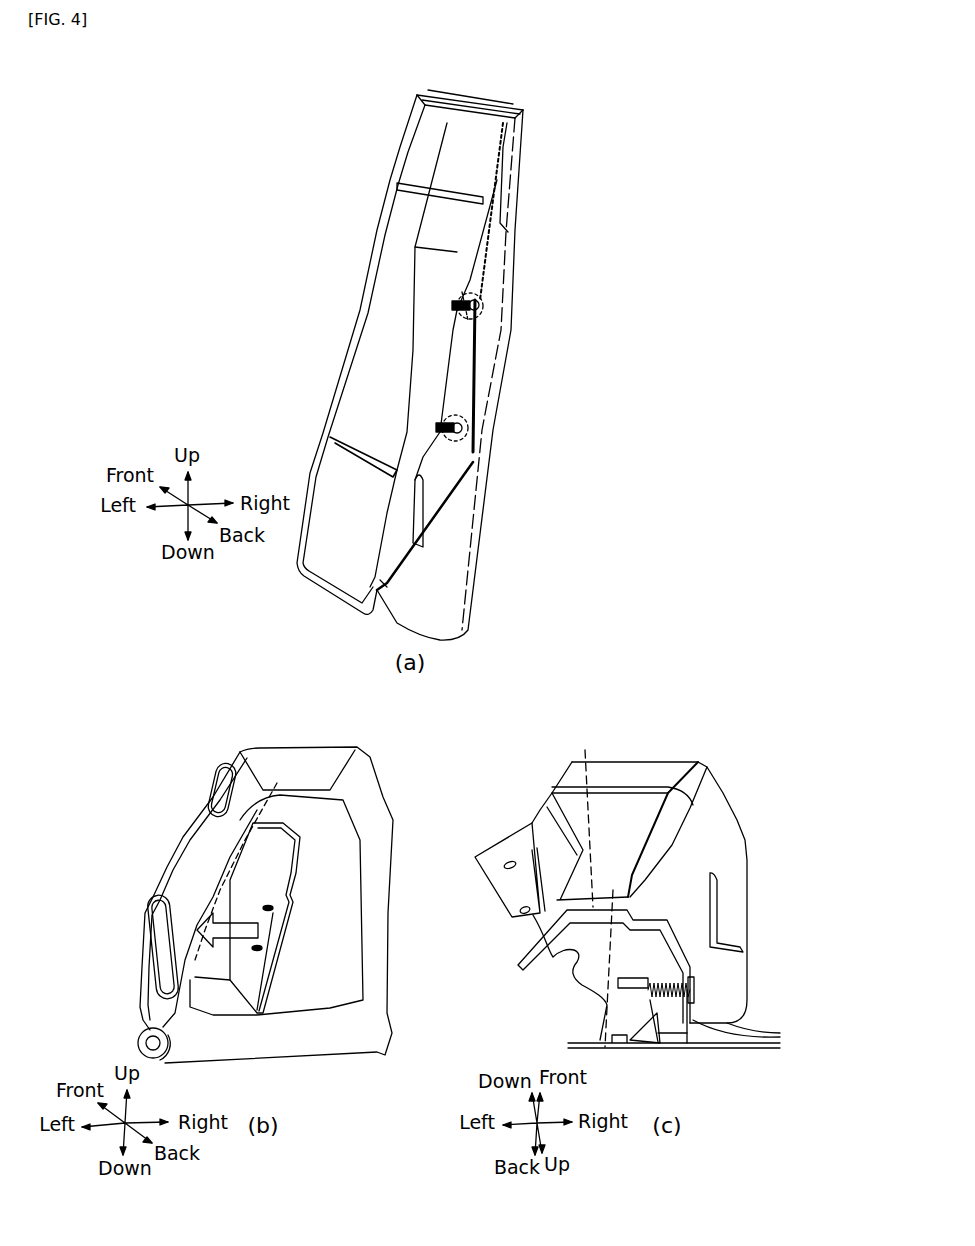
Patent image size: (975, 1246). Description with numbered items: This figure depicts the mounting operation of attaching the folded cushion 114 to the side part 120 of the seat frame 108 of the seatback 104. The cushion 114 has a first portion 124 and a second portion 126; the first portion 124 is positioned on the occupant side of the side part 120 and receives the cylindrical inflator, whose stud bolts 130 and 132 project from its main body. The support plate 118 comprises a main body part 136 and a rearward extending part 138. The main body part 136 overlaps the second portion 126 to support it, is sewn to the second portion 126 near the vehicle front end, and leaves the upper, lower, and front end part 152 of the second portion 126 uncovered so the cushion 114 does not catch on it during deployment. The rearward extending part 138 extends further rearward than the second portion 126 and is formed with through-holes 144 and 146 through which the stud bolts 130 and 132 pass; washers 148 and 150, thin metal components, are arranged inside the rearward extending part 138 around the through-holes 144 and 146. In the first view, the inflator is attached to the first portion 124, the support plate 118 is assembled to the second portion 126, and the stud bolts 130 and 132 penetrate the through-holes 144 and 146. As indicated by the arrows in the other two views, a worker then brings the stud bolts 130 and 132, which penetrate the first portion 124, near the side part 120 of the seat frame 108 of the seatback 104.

The seatback 104 is at (333, 742).
The seat frame 108 is at (718, 1047).
The cushion 114 is at (428, 88).
The support plate 118 is at (392, 333).
The side part 120 is at (185, 852).
The first portion 124 is at (508, 242).
The second portion 126 is at (477, 112).
The stud bolt 130 is at (467, 293).
The stud bolt 132 is at (455, 418).
The main body part 136 is at (365, 383).
The rearward extending part 138 is at (468, 367).
The through-hole 144 is at (472, 310).
The through-hole 146 is at (472, 462).
The washer 148 is at (478, 305).
The washer 150 is at (460, 428).
The front end part 152 is at (398, 138).